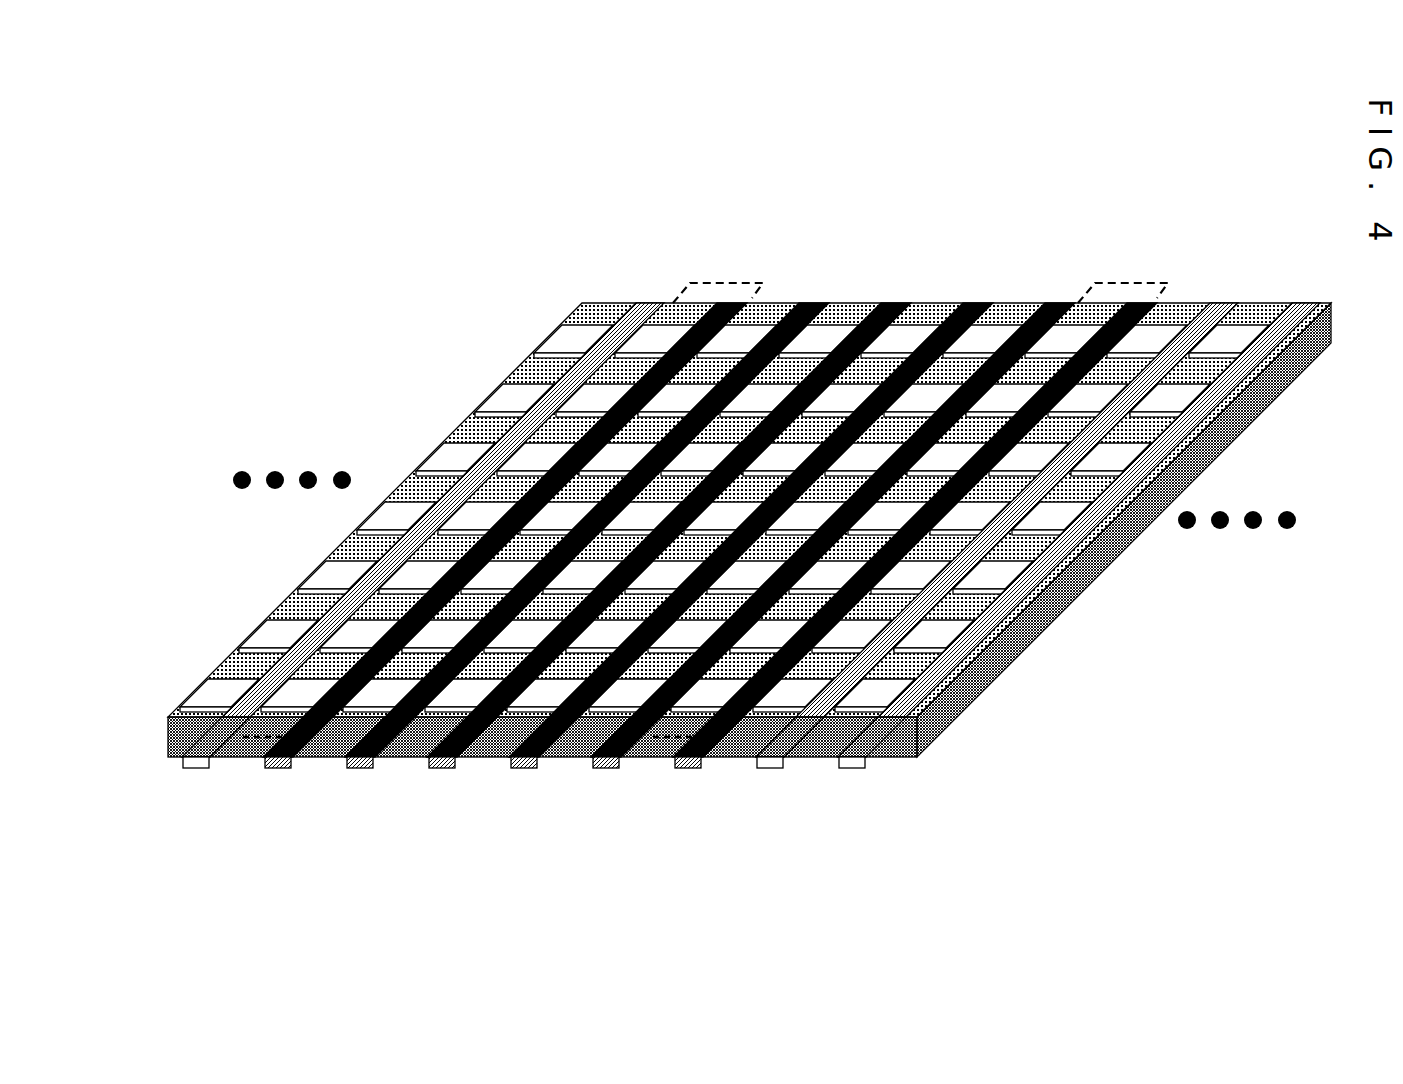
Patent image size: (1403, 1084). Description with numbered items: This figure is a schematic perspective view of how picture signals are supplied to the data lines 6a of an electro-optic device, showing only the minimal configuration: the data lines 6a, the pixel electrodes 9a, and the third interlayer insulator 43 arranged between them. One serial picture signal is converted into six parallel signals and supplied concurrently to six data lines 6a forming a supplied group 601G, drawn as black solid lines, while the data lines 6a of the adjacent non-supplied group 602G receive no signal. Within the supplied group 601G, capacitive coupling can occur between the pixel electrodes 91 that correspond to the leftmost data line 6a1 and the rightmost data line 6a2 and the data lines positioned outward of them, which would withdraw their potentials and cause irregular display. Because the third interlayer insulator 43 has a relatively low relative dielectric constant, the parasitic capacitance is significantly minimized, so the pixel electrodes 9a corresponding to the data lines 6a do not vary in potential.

The third interlayer insulator 43 is at (995, 658).
The pixel electrode 9a is at (576, 342).
The pixel electrodes 91 is at (724, 283).
The supplied group 601G is at (240, 778).
The non-supplied group 602G is at (240, 778).
The leftmost data line 6a1 is at (275, 768).
The rightmost data line 6a2 is at (687, 768).
The data line 6a is at (850, 768).